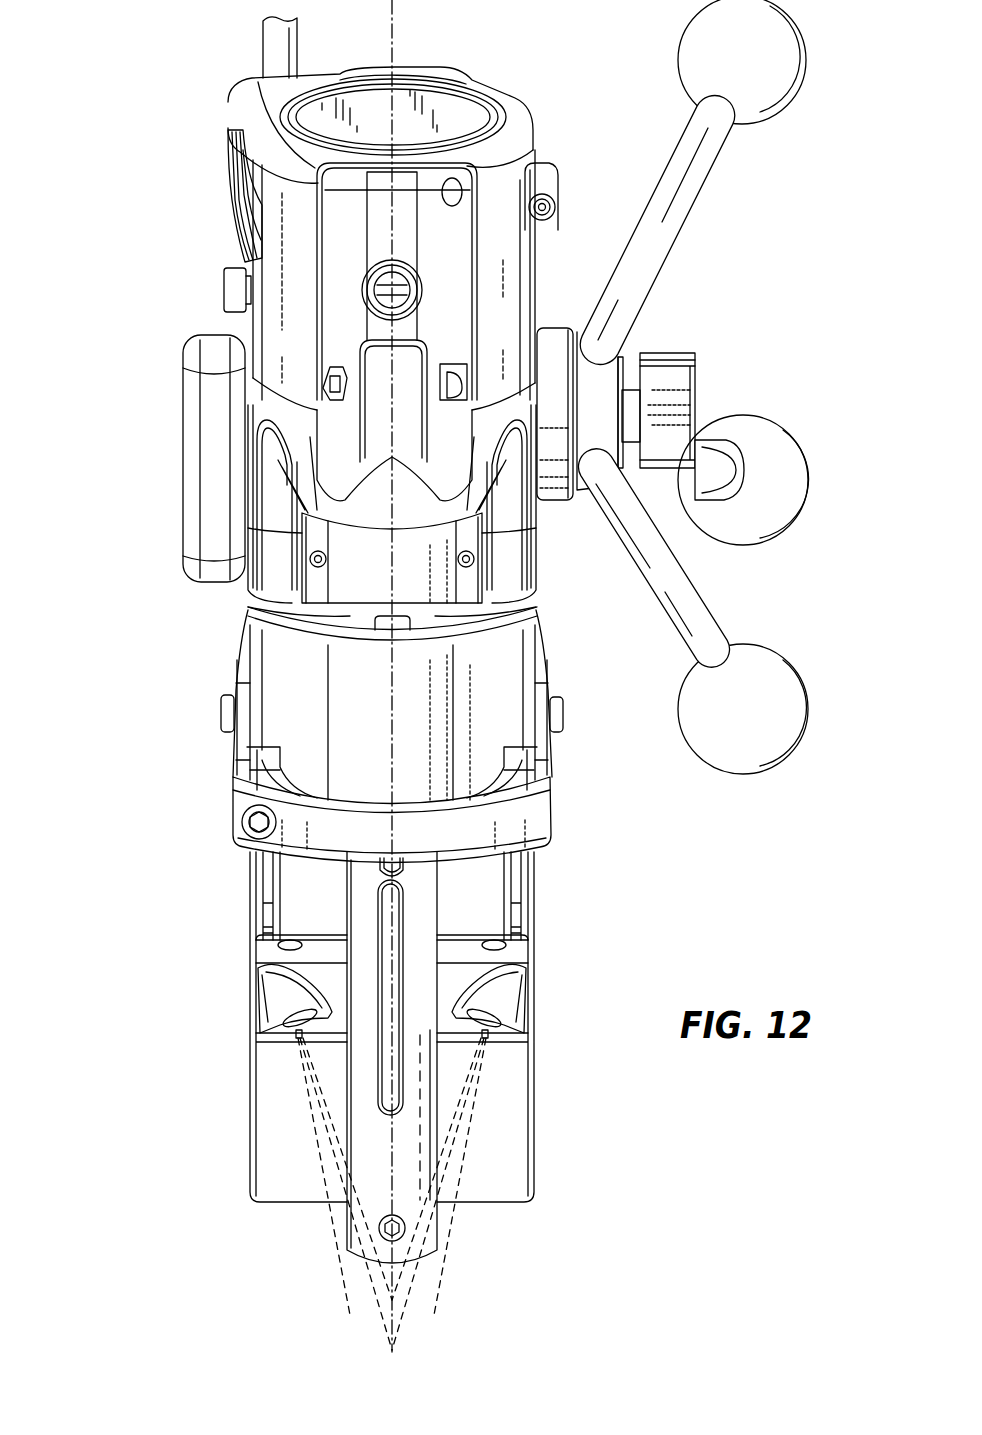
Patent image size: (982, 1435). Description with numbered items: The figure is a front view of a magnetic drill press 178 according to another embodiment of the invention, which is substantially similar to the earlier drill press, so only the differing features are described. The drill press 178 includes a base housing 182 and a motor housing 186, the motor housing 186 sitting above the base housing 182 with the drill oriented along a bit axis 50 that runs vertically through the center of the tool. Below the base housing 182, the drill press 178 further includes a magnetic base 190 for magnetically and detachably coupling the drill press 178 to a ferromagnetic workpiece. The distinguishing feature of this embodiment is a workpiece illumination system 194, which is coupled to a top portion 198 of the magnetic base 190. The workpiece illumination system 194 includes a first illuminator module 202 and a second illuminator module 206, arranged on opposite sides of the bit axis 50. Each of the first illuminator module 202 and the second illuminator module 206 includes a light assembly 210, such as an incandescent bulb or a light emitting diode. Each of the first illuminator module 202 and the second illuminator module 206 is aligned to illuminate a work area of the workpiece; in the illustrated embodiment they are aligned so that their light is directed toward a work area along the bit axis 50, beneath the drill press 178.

The bit axis 50 is at (395, 6).
The drill press 178 is at (132, 222).
The base housing 182 is at (535, 885).
The motor housing 186 is at (510, 262).
The magnetic base 190 is at (503, 1150).
The workpiece illumination system 194 is at (545, 975).
The top portion 198 is at (530, 1036).
The first illuminator module 202 is at (497, 1000).
The second illuminator module 206 is at (287, 997).
The light assembly 210 is at (292, 1042).